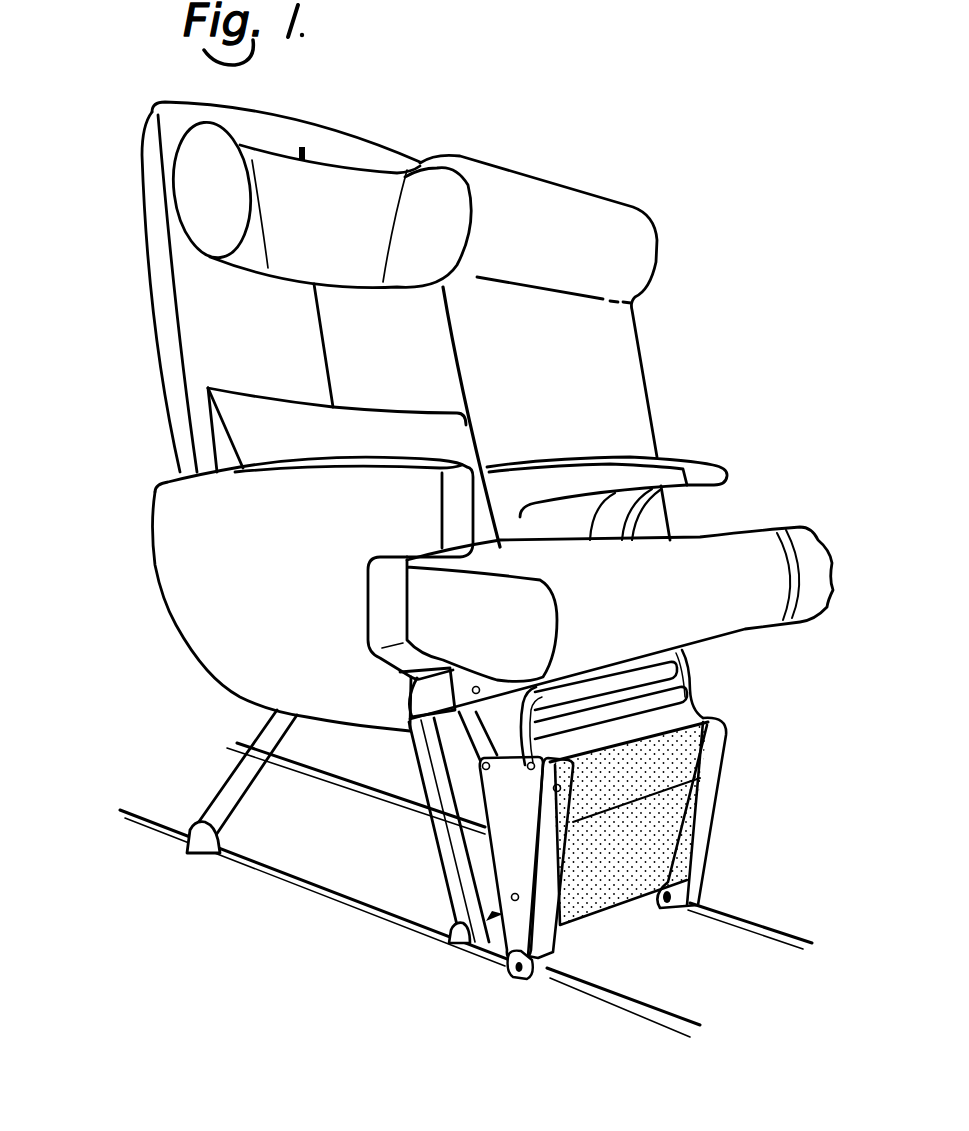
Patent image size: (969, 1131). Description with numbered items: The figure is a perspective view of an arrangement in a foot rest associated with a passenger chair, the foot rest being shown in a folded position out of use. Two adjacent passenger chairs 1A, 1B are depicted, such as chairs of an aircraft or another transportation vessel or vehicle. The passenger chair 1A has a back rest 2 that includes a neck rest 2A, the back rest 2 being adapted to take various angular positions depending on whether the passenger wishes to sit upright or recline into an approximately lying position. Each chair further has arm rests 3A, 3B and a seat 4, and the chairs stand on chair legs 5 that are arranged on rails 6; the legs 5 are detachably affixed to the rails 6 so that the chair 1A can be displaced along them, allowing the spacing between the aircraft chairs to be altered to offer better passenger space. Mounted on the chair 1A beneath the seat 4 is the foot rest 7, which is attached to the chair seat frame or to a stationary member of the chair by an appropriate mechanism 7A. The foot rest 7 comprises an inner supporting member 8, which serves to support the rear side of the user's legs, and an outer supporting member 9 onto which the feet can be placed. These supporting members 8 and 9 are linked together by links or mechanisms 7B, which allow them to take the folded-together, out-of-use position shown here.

The passenger chair 1A is at (323, 129).
The passenger chair 1B is at (550, 184).
The back rest 2 is at (190, 360).
The neck rest 2A is at (180, 322).
The arm rest 3A is at (240, 630).
The arm rest 3B is at (690, 460).
The seat 4 is at (713, 550).
The chair legs 5 is at (230, 790).
The rails 6 is at (347, 790).
The foot rest 7 is at (457, 928).
The mechanism 7A is at (687, 683).
The links 7B is at (507, 972).
The inner supporting member 8 is at (488, 918).
The outer supporting member 9 is at (707, 800).